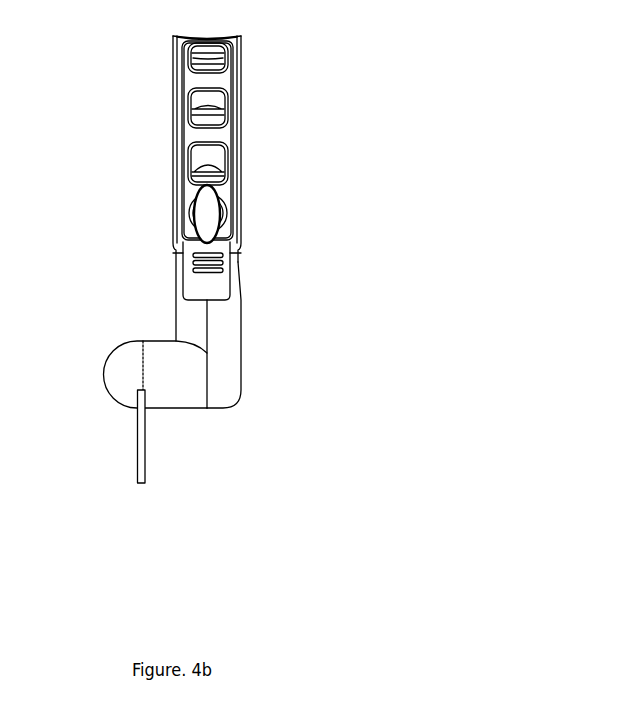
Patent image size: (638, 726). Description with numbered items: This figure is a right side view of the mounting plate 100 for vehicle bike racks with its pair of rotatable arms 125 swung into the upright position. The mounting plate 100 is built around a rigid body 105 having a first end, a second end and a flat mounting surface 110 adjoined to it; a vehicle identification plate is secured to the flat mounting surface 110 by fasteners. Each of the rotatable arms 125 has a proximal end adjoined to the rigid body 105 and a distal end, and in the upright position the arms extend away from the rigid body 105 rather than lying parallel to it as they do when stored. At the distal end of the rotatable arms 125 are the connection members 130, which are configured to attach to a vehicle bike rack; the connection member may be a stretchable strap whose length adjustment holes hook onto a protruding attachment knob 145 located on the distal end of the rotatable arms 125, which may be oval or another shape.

The mounting plate 100 is at (244, 290).
The rigid body 105 is at (131, 362).
The flat mounting surface 110 is at (128, 453).
The rotatable arms 125 is at (218, 384).
The connection members 130 is at (251, 165).
The protruding attachment knob 145 is at (207, 213).